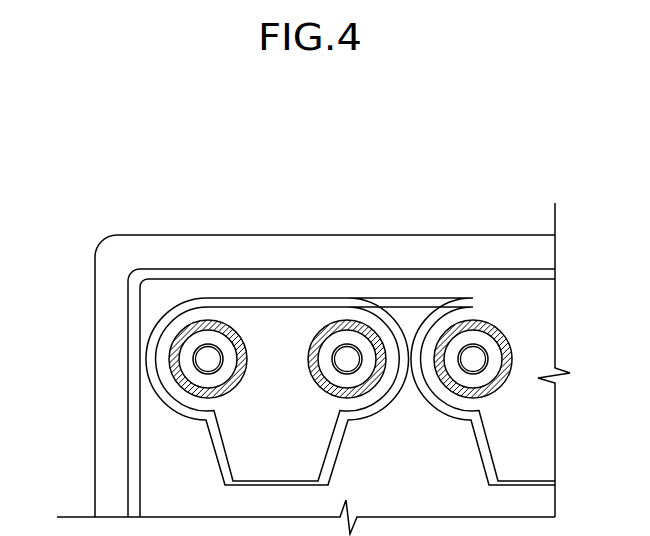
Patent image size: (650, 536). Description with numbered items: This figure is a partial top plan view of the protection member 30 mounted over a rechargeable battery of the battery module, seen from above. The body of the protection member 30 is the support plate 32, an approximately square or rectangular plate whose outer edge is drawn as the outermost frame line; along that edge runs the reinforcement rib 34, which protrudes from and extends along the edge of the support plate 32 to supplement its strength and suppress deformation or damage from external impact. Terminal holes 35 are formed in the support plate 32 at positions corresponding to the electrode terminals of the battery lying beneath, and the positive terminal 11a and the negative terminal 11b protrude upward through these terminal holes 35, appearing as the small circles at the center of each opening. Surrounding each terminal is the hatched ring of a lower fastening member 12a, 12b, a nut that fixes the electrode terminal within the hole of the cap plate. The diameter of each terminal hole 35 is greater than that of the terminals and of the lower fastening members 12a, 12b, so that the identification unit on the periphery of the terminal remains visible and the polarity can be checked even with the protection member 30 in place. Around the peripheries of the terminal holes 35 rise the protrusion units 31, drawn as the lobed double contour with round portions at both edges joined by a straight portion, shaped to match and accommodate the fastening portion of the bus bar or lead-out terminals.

The protection member 30 is at (92, 371).
The protrusion unit 31 is at (168, 319).
The support plate 32 is at (115, 253).
The reinforcement rib 34 is at (135, 432).
The terminal hole 35 is at (315, 342).
The positive terminal 11a is at (208, 358).
The negative terminal 11b is at (347, 358).
The lower fastening member 12a is at (190, 343).
The lower fastening member 12b is at (363, 343).